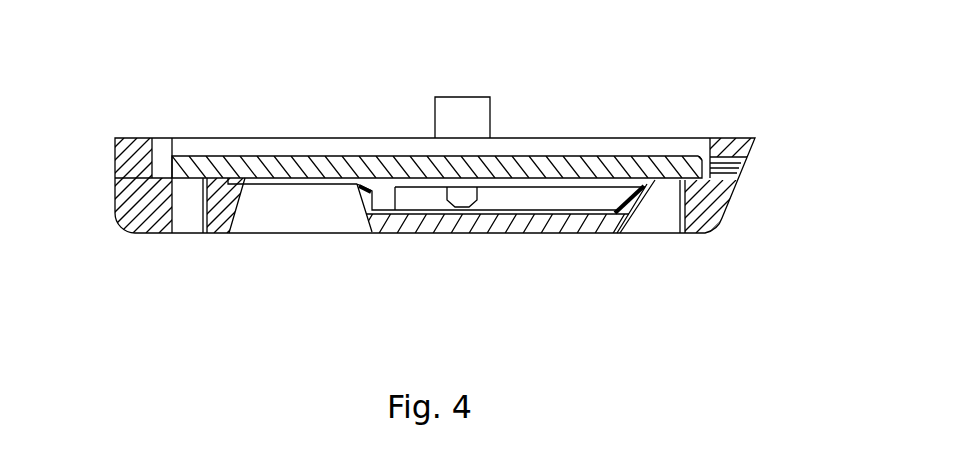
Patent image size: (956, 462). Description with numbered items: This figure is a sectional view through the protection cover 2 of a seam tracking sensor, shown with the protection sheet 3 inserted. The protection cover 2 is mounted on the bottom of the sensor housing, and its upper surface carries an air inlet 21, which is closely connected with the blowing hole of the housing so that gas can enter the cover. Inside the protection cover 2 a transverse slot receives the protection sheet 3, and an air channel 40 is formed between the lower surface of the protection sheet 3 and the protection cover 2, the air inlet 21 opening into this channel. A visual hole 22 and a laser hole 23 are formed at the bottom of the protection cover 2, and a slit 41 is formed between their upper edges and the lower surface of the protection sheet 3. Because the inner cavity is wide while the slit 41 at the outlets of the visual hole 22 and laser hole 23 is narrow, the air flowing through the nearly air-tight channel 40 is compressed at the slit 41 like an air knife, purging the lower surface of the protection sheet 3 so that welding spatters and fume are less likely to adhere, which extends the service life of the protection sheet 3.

The protection cover 2 is at (415, 223).
The air inlet 21 is at (460, 118).
The visual hole 22 is at (295, 212).
The laser hole 23 is at (650, 222).
The protection sheet 3 is at (482, 172).
The air channel 40 is at (545, 203).
The slit 41 is at (259, 163).